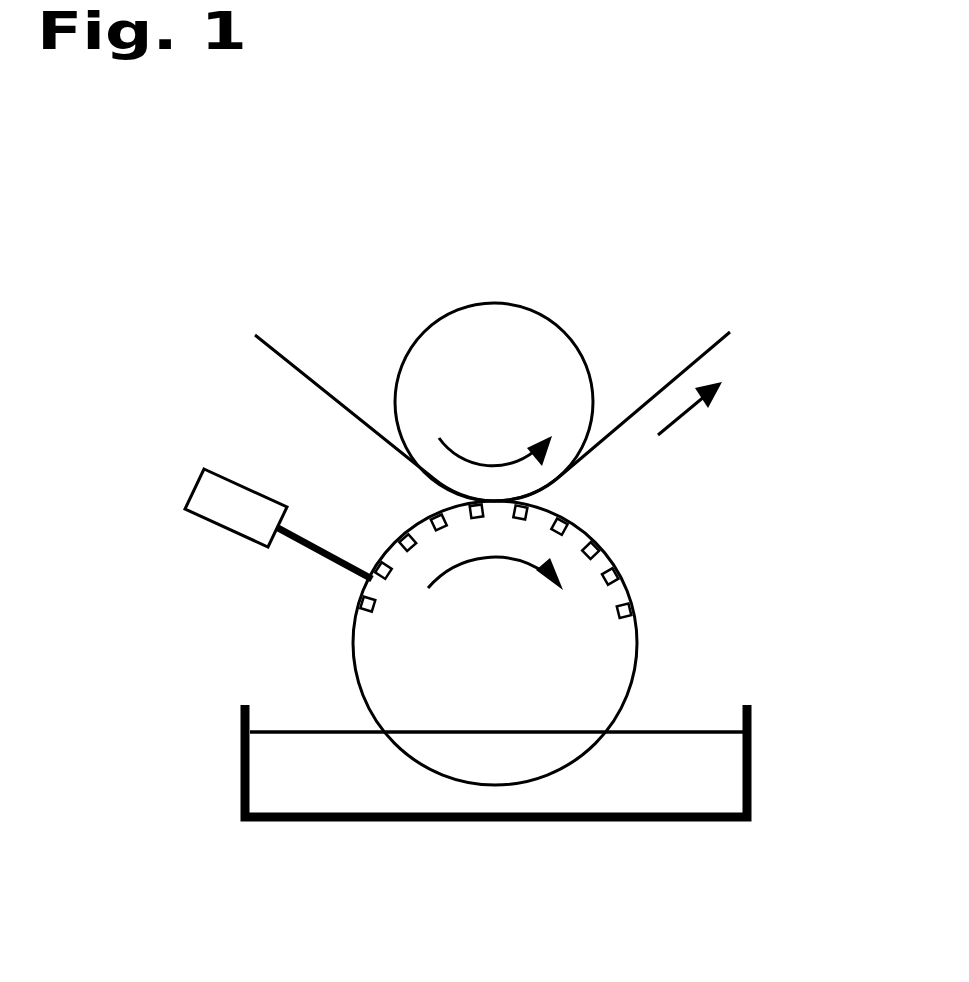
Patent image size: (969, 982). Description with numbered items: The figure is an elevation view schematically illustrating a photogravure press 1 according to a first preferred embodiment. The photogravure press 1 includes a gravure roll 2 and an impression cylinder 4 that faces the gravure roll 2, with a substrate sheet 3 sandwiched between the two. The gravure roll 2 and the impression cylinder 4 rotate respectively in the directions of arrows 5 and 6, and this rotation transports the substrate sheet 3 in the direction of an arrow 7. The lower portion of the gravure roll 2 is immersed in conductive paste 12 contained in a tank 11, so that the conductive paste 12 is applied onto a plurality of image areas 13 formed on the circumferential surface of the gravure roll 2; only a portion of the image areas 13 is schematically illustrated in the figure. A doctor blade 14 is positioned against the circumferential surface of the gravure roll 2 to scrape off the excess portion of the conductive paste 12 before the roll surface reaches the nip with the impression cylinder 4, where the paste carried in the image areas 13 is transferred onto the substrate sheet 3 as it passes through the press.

The photogravure press 1 is at (501, 485).
The gravure roll 2 is at (640, 642).
The substrate sheet 3 is at (718, 345).
The impression cylinder 4 is at (570, 340).
The arrow 5 is at (458, 568).
The arrow 6 is at (462, 462).
The arrow 7 is at (680, 420).
The tank 11 is at (753, 767).
The conductive paste 12 is at (685, 742).
The image areas 13 is at (538, 562).
The doctor blade 14 is at (235, 535).